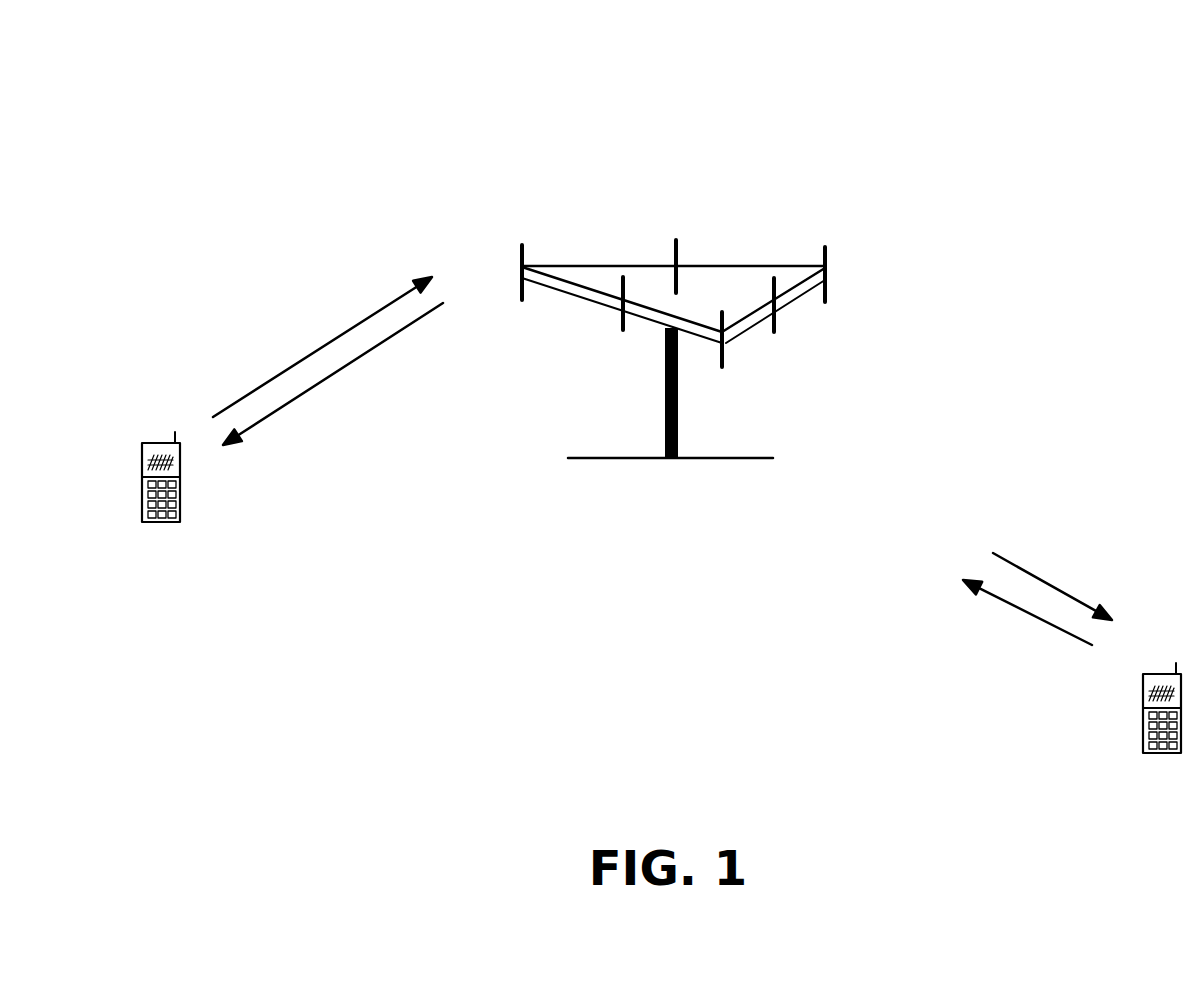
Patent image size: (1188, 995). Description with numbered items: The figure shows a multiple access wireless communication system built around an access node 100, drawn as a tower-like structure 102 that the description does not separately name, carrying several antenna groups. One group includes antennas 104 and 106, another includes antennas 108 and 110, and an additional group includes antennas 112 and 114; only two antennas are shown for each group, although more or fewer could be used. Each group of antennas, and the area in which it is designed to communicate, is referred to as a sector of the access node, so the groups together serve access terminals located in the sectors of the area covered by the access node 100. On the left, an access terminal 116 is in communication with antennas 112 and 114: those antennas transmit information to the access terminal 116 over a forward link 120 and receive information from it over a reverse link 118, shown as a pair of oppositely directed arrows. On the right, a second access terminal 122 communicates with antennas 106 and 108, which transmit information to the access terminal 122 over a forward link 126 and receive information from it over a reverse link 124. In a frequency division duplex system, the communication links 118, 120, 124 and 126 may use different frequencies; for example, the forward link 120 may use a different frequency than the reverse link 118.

The access node 100 is at (250, 76).
The base station 102 is at (637, 457).
The antenna 104 is at (728, 360).
The antenna 106 is at (780, 333).
The antenna 108 is at (833, 295).
The antenna 110 is at (676, 239).
The antenna 112 is at (522, 263).
The antenna 114 is at (623, 330).
The access terminal 116 is at (162, 443).
The reverse link 118 is at (317, 345).
The forward link 120 is at (347, 370).
The access terminal 122 is at (1163, 673).
The reverse link 124 is at (1012, 605).
The forward link 126 is at (1058, 592).